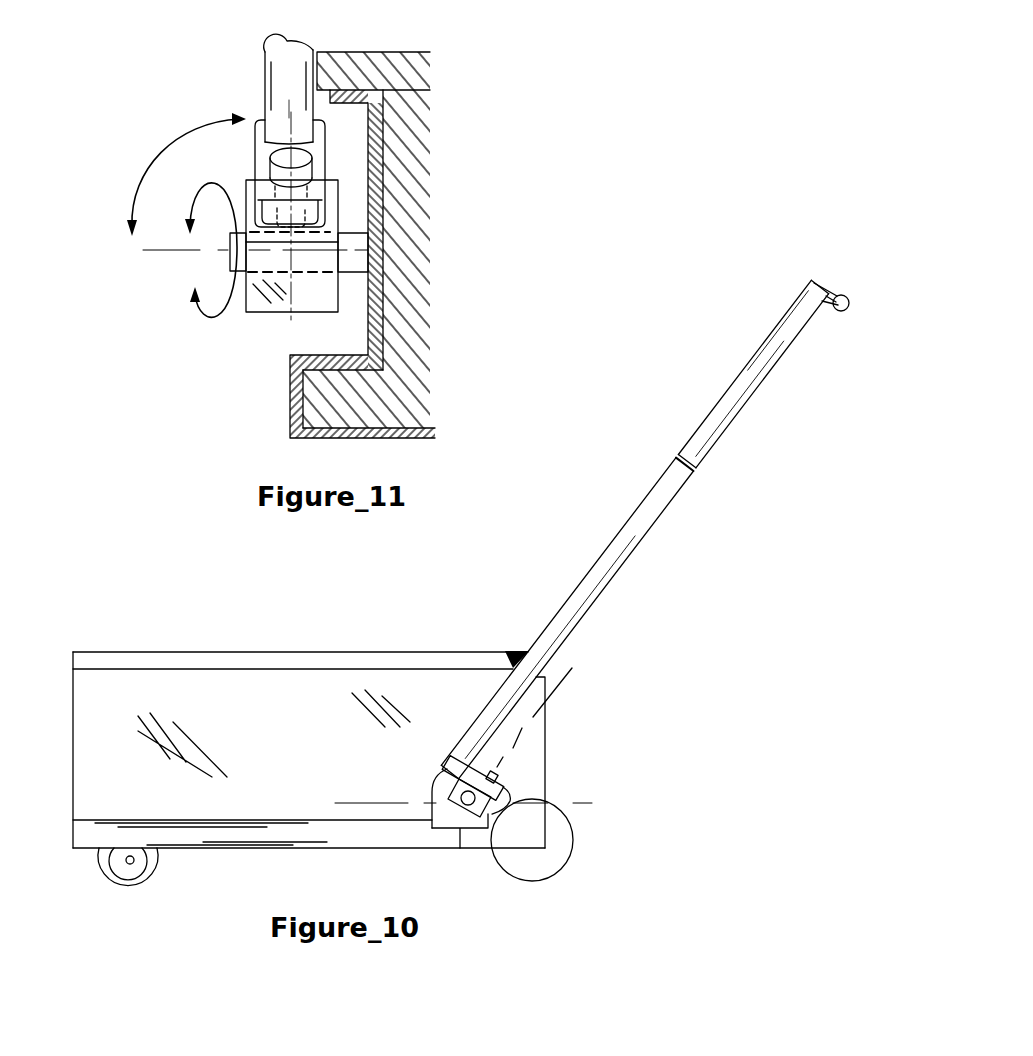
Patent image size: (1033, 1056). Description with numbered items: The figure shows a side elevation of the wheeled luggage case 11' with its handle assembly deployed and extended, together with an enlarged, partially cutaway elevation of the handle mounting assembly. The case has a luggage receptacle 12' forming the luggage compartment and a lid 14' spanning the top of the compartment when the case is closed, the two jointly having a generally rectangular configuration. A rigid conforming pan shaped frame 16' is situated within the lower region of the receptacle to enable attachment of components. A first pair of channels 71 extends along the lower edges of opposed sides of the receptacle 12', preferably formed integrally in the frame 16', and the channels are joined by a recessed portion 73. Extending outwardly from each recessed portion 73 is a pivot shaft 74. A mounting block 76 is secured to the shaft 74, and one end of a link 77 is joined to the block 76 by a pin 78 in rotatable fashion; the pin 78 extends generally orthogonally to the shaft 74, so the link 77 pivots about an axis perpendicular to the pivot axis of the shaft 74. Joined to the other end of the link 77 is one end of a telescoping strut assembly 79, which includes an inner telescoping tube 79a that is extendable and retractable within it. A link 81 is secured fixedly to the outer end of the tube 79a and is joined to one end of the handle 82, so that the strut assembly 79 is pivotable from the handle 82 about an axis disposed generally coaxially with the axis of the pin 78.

In FIG. 10, the wheeled luggage case 11' is at (332, 699).
In FIG. 10, the luggage receptacle 12' is at (274, 733).
In FIG. 10, the lid 14' is at (301, 610).
In FIG. 11, the pan shaped frame 16' is at (330, 394).
In FIG. 10, the first pair of channels 71 is at (188, 836).
In FIG. 11, the recessed portion 73 is at (348, 335).
In FIG. 10, the recessed portion 73 is at (461, 815).
In FIG. 11, the pivot shaft 74 is at (355, 258).
In FIG. 11, the mounting block 76 is at (325, 285).
In FIG. 10, the mounting block 76 is at (466, 801).
In FIG. 11, the link 77 is at (318, 190).
In FIG. 10, the link 77 is at (497, 786).
In FIG. 11, the pin 78 is at (301, 158).
In FIG. 11, the telescoping strut assembly 79 is at (278, 62).
In FIG. 10, the telescoping strut assembly 79 is at (605, 548).
In FIG. 10, the inner telescoping tube 79a is at (708, 413).
In FIG. 10, the link 81 is at (843, 292).
In FIG. 10, the handle 82 is at (830, 315).